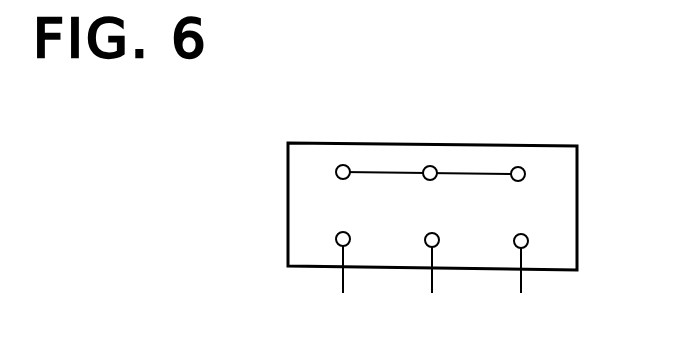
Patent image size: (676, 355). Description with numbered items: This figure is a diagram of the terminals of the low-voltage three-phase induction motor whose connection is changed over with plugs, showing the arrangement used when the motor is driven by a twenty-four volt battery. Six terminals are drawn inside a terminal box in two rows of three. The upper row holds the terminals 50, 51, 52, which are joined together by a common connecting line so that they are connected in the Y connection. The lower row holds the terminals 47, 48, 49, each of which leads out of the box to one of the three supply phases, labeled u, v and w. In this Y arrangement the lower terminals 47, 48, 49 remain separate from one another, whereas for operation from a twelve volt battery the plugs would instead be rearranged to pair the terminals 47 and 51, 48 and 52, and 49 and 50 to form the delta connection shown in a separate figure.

The terminal 47 is at (349, 234).
The terminal 48 is at (438, 235).
The terminal 49 is at (524, 234).
The terminal 50 is at (343, 165).
The terminal 51 is at (430, 166).
The terminal 52 is at (518, 167).